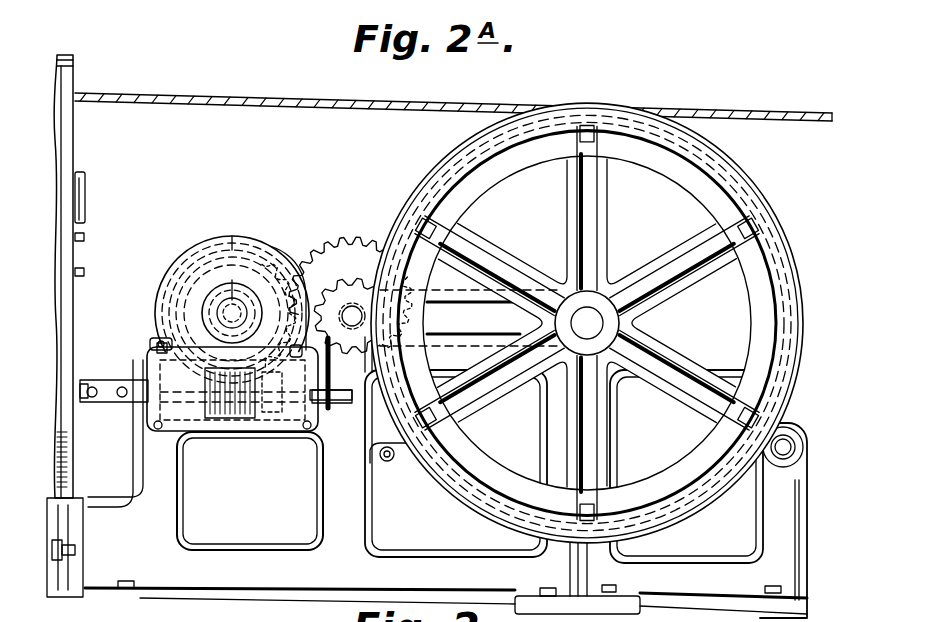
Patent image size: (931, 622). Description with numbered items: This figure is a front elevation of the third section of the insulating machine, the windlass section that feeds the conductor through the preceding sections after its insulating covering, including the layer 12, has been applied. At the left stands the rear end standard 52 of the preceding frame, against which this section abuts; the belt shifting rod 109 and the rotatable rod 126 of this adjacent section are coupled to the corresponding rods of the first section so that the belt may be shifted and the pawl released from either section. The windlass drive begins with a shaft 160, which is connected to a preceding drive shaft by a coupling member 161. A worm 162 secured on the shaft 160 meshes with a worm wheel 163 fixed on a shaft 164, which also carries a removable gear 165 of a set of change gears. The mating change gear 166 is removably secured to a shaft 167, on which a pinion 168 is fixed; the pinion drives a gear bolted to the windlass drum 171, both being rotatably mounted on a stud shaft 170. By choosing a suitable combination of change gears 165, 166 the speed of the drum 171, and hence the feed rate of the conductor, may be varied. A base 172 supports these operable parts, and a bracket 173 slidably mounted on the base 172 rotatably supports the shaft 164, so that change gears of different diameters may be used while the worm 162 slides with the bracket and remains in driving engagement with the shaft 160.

The insulating layer 12 is at (161, 99).
The rear end standard 52 is at (81, 200).
The rotatable rod 126 is at (85, 237).
The belt shifting rod 109 is at (85, 272).
The shaft 160 is at (142, 380).
The coupling member 161 is at (105, 404).
The worm 162 is at (236, 428).
The worm wheel 163 is at (270, 434).
The shaft 164 is at (236, 232).
The removable gear 165 is at (273, 273).
The change gear 166 is at (353, 239).
The shaft 167 is at (349, 306).
The pinion 168 is at (332, 372).
The stud shaft 170 is at (588, 322).
The windlass drum 171 is at (440, 172).
The base 172 is at (432, 562).
The bracket 173 is at (153, 339).